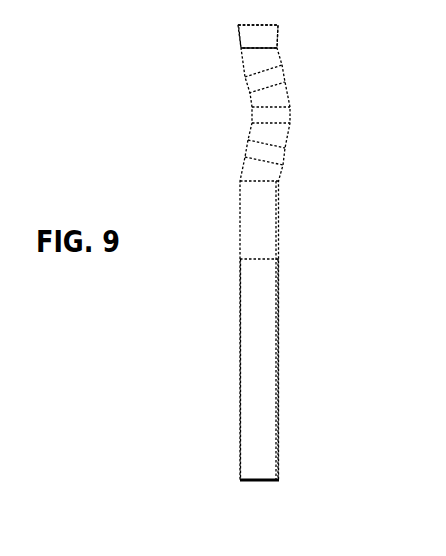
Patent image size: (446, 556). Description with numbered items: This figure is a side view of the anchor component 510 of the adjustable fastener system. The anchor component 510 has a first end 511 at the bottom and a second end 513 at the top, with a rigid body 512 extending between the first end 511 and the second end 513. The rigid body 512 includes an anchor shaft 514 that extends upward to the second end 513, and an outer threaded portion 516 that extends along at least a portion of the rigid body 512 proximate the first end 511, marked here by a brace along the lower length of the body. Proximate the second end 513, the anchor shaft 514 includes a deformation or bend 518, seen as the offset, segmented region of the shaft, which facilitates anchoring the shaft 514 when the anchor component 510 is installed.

The anchor component 510 is at (251, 274).
The first end 511 is at (251, 482).
The rigid body 512 is at (277, 242).
The second end 513 is at (260, 24).
The anchor shaft 514 is at (277, 182).
The outer threaded portion 516 is at (284, 260).
The bend 518 is at (285, 108).